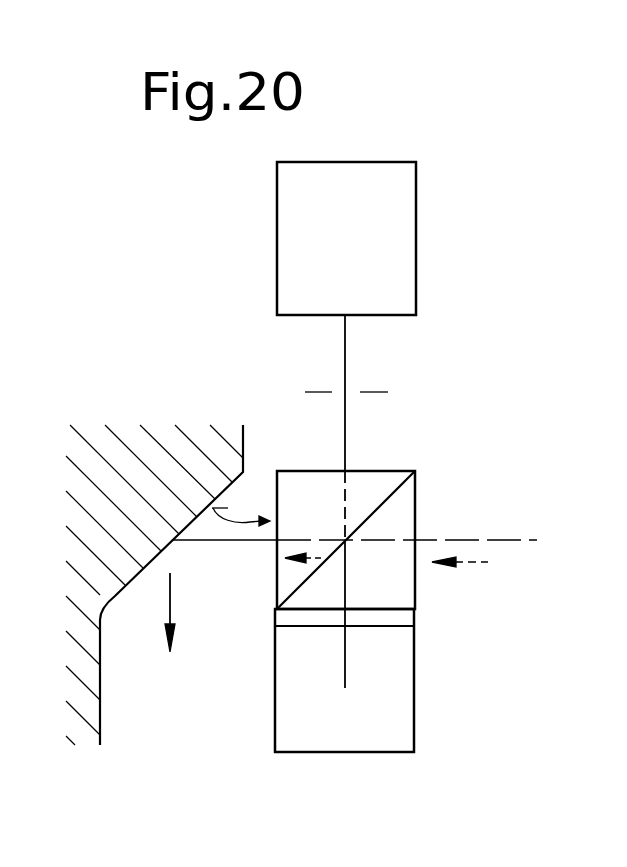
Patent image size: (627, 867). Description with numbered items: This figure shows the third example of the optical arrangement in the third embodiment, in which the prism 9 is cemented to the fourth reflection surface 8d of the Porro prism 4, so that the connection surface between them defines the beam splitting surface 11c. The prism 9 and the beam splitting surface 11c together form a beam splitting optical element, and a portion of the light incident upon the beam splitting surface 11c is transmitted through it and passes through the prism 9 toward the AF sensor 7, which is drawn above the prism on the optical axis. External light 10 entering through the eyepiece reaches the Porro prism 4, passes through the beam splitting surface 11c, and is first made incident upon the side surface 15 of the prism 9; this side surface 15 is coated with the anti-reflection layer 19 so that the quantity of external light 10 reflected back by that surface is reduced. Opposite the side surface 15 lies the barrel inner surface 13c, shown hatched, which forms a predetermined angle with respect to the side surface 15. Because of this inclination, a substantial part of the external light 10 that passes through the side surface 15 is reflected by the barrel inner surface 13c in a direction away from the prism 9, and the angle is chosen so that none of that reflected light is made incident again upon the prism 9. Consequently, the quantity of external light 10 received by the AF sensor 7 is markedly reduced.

The AF sensor 7 is at (385, 233).
The prism 9 is at (360, 490).
The beam splitting surface 11c is at (398, 488).
The fourth reflection surface 8d is at (370, 516).
The external light 10 is at (468, 559).
The Porro prism 4 is at (423, 672).
The side surface 15 is at (275, 573).
The anti-reflection layer 19 is at (275, 585).
The barrel inner surface 13c is at (197, 517).